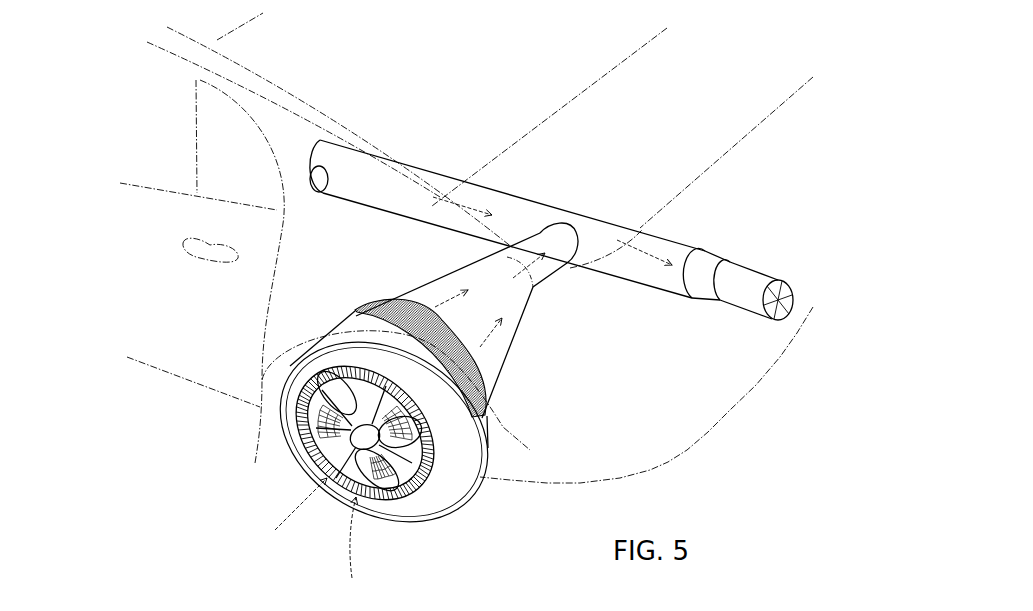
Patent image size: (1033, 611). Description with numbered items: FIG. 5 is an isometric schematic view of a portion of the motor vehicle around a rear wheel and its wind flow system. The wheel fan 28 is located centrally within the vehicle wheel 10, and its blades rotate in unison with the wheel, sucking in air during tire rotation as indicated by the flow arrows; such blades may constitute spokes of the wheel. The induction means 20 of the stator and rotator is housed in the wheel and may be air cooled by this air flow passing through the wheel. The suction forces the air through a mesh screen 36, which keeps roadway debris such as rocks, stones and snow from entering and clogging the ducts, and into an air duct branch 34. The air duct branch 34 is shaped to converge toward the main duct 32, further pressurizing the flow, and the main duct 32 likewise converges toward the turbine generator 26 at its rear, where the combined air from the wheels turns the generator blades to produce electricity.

The vehicle wheel 10 is at (270, 377).
The induction means 20 is at (285, 415).
The wheel fan 28 is at (304, 436).
The mesh screen 36 is at (377, 323).
The air duct branch 34 is at (417, 284).
The main duct 32 is at (363, 212).
The turbine generator 26 is at (783, 261).